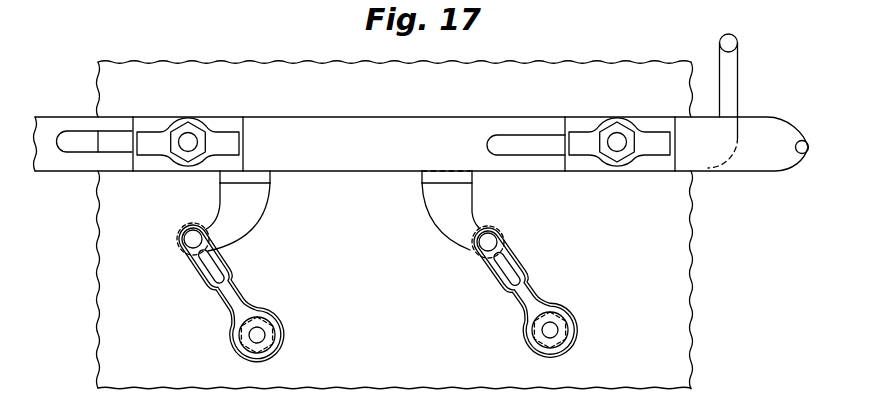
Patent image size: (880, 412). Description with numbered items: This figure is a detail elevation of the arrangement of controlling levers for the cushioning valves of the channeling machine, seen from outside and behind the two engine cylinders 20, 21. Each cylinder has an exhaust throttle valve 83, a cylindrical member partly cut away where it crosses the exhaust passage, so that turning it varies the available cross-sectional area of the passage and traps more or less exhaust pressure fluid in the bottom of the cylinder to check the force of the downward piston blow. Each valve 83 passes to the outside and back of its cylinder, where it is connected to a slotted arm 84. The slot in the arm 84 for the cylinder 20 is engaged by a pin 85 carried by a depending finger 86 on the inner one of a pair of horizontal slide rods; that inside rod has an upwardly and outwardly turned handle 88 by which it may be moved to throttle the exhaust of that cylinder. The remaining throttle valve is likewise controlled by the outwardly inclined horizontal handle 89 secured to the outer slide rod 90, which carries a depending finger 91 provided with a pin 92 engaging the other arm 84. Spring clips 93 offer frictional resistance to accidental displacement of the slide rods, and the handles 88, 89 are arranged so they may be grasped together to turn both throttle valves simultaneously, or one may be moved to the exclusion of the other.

The cylinder 20 is at (113, 339).
The cylinder 21 is at (683, 352).
The throttle valve 83 is at (265, 334).
The slotted arm 84 is at (245, 297).
The pin 85 is at (184, 243).
The depending finger 86 is at (250, 207).
The handle 88 is at (727, 77).
The handle 89 is at (801, 154).
The slide rod 90 is at (399, 158).
The depending finger 91 is at (456, 204).
The pin 92 is at (496, 243).
The spring clips 93 is at (161, 144).